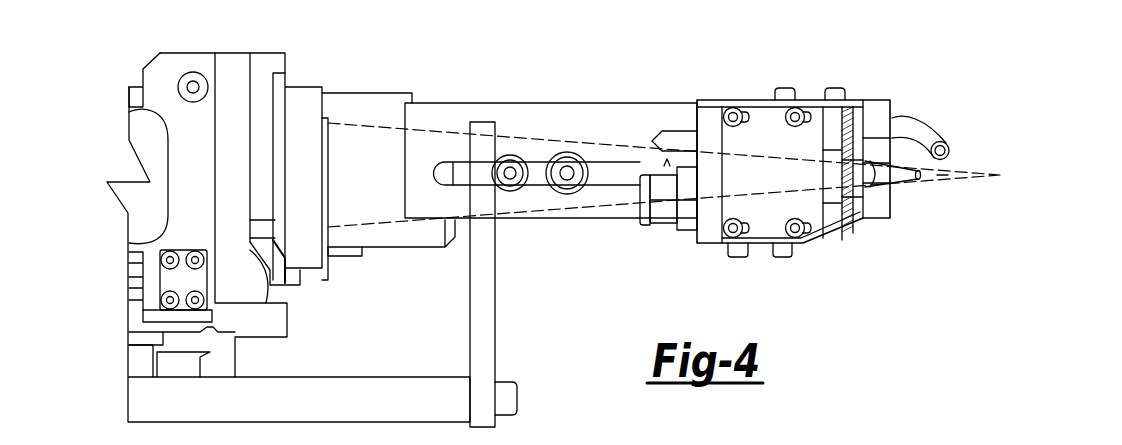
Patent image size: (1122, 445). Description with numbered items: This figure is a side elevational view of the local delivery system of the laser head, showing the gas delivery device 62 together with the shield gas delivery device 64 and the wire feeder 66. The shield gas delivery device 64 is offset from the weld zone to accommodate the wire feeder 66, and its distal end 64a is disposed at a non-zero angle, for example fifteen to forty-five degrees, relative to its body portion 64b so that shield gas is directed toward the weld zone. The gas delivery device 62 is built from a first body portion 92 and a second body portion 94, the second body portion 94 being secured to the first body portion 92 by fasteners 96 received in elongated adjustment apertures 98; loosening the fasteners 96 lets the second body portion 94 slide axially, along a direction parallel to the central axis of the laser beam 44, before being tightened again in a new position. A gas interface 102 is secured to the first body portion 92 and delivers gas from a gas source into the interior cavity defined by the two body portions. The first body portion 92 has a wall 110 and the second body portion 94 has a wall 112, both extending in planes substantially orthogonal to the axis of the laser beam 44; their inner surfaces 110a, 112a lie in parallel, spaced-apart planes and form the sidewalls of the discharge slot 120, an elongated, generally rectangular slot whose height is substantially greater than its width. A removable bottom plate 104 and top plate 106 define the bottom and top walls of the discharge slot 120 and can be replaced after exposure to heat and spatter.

The laser beam 44 is at (940, 177).
The gas delivery device 62 is at (673, 75).
The shield gas delivery device 64 is at (928, 134).
The distal end 64a is at (953, 147).
The body portion 64b is at (873, 117).
The wire feeder 66 is at (899, 160).
The first body portion 92 is at (694, 241).
The second body portion 94 is at (757, 228).
The fasteners 96 is at (720, 111).
The elongated adjustment apertures 98 is at (733, 117).
The gas interface 102 is at (638, 222).
The bottom plate 104 is at (787, 245).
The top plate 106 is at (790, 88).
The wall 110 is at (830, 217).
The inner surface 110a is at (843, 115).
The wall 112 is at (851, 219).
The inner surface 112a is at (838, 116).
The discharge slot 120 is at (853, 208).